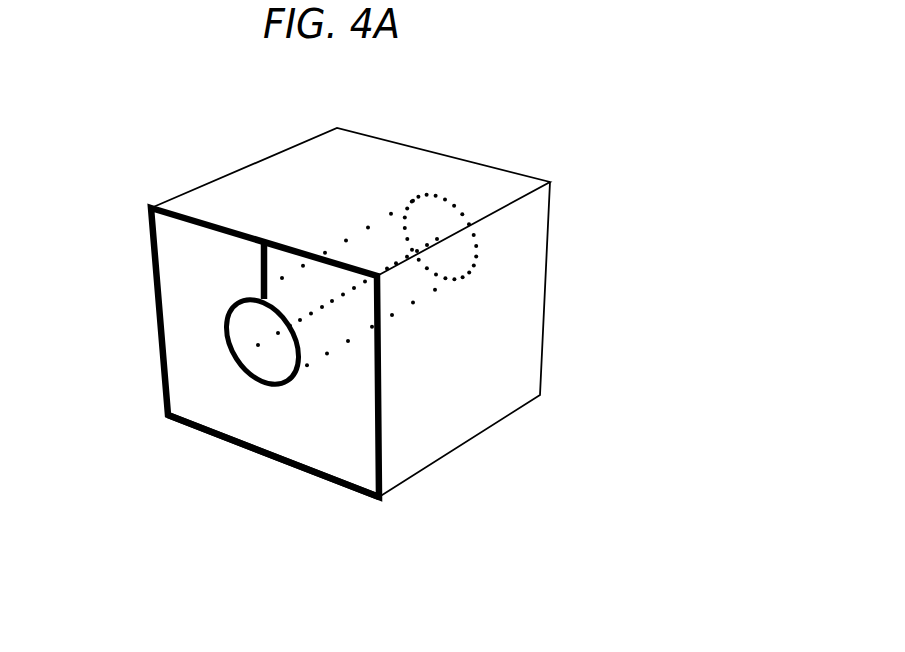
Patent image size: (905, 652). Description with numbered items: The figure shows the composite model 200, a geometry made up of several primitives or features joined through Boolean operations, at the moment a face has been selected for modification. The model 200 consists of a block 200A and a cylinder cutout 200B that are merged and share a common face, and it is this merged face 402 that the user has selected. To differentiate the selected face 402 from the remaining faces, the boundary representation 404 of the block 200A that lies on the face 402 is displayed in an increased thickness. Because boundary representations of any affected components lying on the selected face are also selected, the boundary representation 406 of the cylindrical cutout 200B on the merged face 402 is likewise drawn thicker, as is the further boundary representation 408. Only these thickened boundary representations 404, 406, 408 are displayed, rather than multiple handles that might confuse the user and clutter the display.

The composite model 200 is at (538, 97).
The block 200A is at (260, 187).
The cylinder cutout 200B is at (328, 358).
The face 402 is at (192, 313).
The boundary representation 404 is at (198, 433).
The boundary representation 406 is at (265, 389).
The boundary representation 408 is at (262, 270).